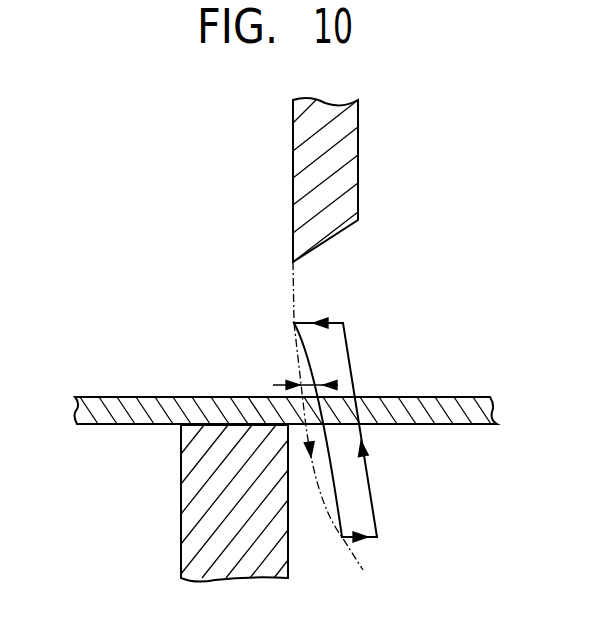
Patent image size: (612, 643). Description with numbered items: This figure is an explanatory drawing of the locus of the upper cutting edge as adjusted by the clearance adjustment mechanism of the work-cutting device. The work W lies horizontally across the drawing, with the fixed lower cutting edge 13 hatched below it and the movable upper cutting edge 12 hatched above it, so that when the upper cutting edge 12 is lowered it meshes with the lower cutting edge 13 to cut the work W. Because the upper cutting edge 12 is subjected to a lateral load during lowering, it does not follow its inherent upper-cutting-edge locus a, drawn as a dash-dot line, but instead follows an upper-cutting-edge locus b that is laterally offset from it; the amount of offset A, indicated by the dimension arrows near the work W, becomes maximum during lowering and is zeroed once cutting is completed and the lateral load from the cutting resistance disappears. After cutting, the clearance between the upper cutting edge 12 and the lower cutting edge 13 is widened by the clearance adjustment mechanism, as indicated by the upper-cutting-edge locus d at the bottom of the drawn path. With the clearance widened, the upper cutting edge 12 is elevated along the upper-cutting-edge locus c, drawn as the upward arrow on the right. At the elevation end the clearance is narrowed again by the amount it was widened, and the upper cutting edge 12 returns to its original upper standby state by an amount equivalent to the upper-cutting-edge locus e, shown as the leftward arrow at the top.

The upper cutting edge 12 is at (345, 140).
The lower cutting edge 13 is at (198, 515).
The work W is at (121, 412).
The amount of offset A is at (313, 382).
The inherent upper-cutting-edge locus a is at (318, 478).
The upper-cutting-edge locus during lowering b is at (338, 508).
The upper-cutting-edge locus during elevation c is at (367, 487).
The upper-cutting-edge locus for clearance widening d is at (371, 539).
The upper-cutting-edge locus for clearance return e is at (305, 323).